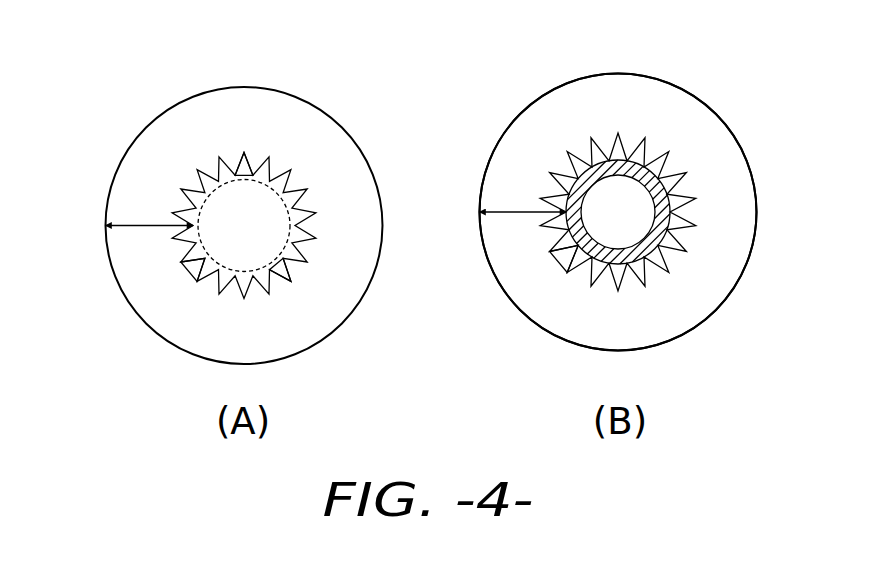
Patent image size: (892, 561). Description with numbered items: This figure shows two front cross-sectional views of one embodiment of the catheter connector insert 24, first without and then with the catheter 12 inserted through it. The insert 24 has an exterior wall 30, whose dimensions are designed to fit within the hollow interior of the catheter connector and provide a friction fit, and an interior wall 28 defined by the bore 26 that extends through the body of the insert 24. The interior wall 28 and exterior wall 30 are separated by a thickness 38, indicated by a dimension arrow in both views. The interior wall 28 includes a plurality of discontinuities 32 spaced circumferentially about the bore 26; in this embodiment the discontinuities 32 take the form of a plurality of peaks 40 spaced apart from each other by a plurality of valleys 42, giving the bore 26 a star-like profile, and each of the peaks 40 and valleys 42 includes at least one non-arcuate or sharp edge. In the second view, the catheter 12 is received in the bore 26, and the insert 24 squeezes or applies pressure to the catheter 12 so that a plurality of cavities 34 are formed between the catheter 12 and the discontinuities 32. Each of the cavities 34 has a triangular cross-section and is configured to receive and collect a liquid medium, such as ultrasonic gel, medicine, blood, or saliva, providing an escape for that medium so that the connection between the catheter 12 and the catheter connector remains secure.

The catheter 12 is at (591, 165).
The insert 24 is at (288, 91).
The bore 26 is at (229, 238).
The interior wall 28 is at (272, 277).
The exterior wall 30 is at (714, 117).
The discontinuities 32 is at (193, 270).
The cavities 34 is at (566, 246).
The thickness 38 is at (145, 223).
The peaks 40 is at (233, 153).
The valleys 42 is at (246, 168).